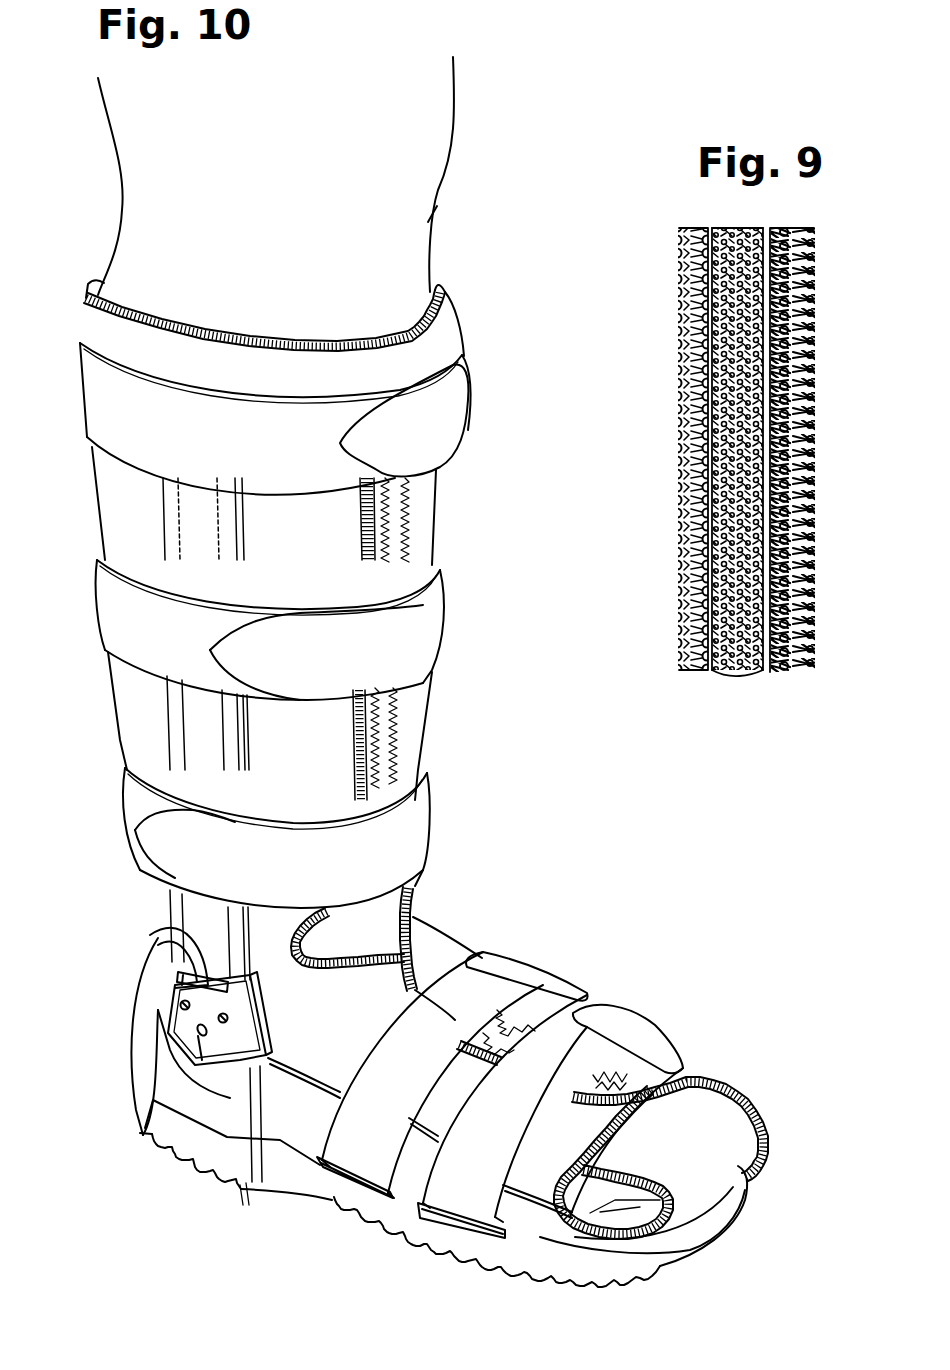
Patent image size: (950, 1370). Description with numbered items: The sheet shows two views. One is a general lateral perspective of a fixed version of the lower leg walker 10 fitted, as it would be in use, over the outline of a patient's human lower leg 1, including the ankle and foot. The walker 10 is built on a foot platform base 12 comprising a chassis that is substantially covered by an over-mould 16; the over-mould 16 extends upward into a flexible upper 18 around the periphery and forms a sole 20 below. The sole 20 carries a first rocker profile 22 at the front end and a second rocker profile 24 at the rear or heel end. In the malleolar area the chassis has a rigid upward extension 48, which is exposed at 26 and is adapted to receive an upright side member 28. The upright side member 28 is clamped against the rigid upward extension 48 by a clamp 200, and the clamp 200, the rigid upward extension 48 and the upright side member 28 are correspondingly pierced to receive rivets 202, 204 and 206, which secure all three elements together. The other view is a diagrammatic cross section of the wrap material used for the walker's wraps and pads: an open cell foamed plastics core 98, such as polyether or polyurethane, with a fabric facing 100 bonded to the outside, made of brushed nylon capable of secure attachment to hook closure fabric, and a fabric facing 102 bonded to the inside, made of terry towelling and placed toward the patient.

In FIG. 10, the human lower leg outline 1 is at (131, 208).
In FIG. 10, the lower leg walker 10 is at (106, 1216).
In FIG. 10, the foot platform base 12 is at (401, 1222).
In FIG. 10, the over-mould 16 is at (146, 1138).
In FIG. 10, the flexible upper 18 is at (410, 1168).
In FIG. 10, the sole 20 is at (331, 1209).
In FIG. 10, the first rocker profile 22 is at (425, 1256).
In FIG. 10, the second rocker profile 24 is at (212, 1186).
In FIG. 10, the exposed area of rigid upward extension 26 is at (245, 1190).
In FIG. 10, the upright side member 28 is at (182, 926).
In FIG. 10, the rigid upward extension 48 is at (250, 983).
In FIG. 9, the open cell foamed plastics core 98 is at (750, 482).
In FIG. 9, the outside fabric facing 100 is at (813, 299).
In FIG. 9, the inside fabric facing 102 is at (683, 299).
In FIG. 10, the clamp 200 is at (188, 1028).
In FIG. 10, the rivet 202 is at (170, 1010).
In FIG. 10, the rivet 204 is at (233, 1022).
In FIG. 10, the rivet 206 is at (200, 1060).